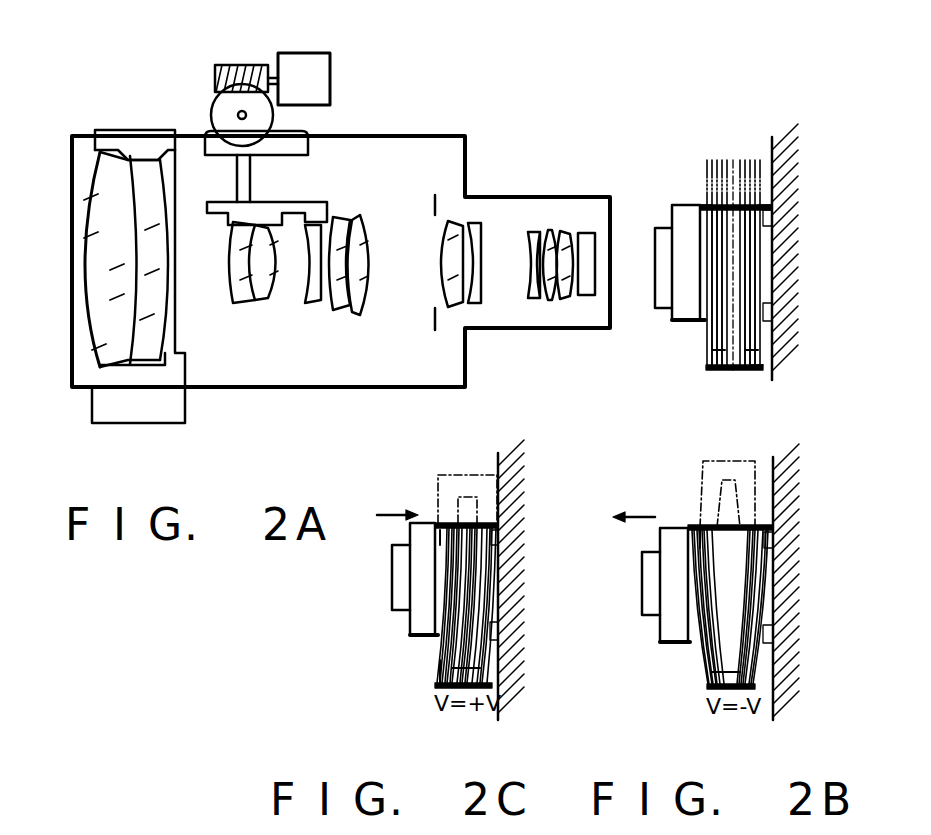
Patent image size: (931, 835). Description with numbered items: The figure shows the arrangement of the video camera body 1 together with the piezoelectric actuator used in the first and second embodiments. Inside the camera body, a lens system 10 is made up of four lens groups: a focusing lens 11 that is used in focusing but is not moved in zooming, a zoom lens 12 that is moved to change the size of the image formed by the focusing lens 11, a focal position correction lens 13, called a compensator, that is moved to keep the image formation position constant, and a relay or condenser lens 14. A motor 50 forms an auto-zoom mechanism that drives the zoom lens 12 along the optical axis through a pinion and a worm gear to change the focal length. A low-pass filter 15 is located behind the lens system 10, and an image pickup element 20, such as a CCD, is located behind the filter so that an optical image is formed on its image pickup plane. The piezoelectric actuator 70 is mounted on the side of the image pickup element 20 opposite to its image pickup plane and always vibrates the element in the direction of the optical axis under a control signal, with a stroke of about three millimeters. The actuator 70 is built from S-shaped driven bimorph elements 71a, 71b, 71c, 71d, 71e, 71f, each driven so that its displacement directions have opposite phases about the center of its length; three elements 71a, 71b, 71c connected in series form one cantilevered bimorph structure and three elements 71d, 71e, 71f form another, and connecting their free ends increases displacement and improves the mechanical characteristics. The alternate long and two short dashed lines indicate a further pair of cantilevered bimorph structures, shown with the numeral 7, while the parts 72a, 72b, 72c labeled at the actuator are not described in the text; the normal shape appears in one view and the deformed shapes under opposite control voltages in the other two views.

In FIG. 2A, the video camera body 1 is at (470, 66).
In FIG. 2A, the lens system 10 is at (237, 358).
In FIG. 2A, the focusing lens 11 is at (100, 362).
In FIG. 2A, the zoom lens 12 is at (325, 320).
In FIG. 2A, the focal position correction lens 13 is at (456, 314).
In FIG. 2A, the relay lens 14 is at (577, 218).
In FIG. 2A, the low-pass filter 15 is at (588, 232).
In FIG. 2A, the motor 50 is at (320, 53).
In FIG. 2B, the variable angle prism 7 is at (765, 454).
In FIG. 2C, the piezoelectric actuator 70 is at (495, 464).
In FIG. 2B, the piezoelectric actuator 70 is at (765, 150).
In FIG. 2C, the image pickup element 20 is at (412, 626).
In FIG. 2C, the S-shaped driven bimorph element 71a is at (437, 653).
In FIG. 2C, the S-shaped driven bimorph element 71b is at (438, 666).
In FIG. 2C, the S-shaped driven bimorph element 71c is at (441, 681).
In FIG. 2C, the S-shaped driven bimorph element 71d is at (470, 577).
In FIG. 2C, the S-shaped driven bimorph element 71e is at (473, 610).
In FIG. 2C, the S-shaped driven bimorph element 71f is at (481, 642).
In FIG. 2B, the glass plate 72a is at (704, 206).
In FIG. 2B, the glass plate 72b is at (758, 366).
In FIG. 2B, the bellows 72c is at (763, 208).